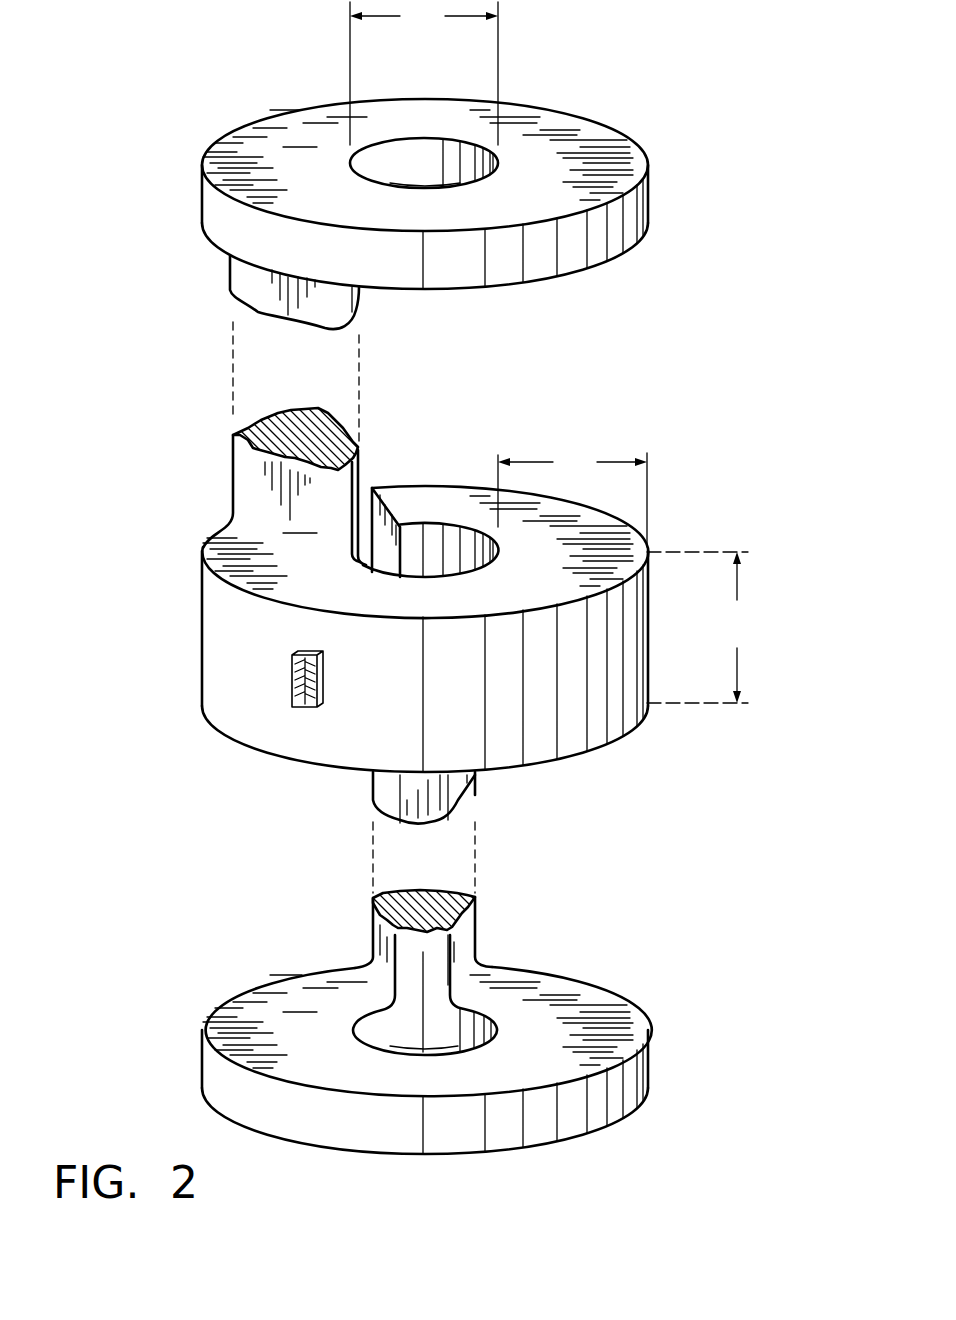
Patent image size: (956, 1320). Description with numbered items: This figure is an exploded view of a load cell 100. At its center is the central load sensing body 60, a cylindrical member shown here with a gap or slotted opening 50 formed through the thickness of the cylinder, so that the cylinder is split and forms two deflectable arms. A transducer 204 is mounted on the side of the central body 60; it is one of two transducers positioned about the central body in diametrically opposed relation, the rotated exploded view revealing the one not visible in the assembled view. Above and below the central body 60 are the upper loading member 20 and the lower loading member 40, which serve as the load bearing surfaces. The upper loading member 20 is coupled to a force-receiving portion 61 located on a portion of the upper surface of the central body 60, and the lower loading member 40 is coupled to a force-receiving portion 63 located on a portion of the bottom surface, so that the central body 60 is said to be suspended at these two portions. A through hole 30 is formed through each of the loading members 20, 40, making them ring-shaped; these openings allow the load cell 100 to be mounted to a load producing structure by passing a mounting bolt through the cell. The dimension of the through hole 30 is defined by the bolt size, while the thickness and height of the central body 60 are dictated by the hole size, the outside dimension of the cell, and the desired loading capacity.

The load cell 100 is at (228, 44).
The upper loading member 20 is at (648, 187).
The through hole 30 is at (407, 158).
The lower loading member 40 is at (648, 1055).
The slotted opening 50 is at (365, 495).
The central load sensing body 60 is at (647, 673).
The force-receiving portion 61 is at (257, 428).
The force-receiving portion 63 is at (433, 825).
The transducer 204 is at (292, 677).